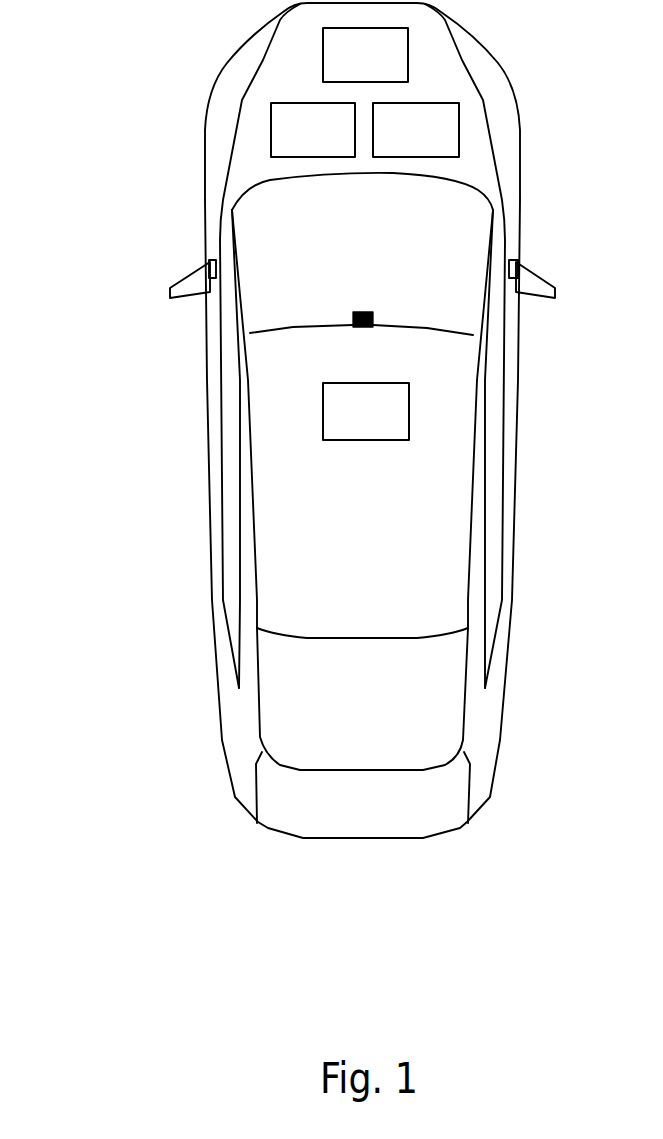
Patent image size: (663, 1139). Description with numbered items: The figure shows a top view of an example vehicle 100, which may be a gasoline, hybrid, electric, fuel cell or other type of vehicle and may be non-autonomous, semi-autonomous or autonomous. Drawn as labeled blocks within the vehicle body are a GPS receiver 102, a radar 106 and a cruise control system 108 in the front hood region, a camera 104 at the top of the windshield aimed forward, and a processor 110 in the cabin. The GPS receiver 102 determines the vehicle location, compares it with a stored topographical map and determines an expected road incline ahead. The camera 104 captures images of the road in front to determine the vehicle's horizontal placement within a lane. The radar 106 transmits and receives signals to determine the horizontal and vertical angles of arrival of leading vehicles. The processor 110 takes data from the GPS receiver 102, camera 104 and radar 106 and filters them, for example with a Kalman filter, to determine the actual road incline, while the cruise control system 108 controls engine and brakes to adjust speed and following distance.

The vehicle 100 is at (222, 76).
The GPS receiver 102 is at (387, 66).
The camera 104 is at (353, 326).
The radar 106 is at (333, 142).
The cruise control system 108 is at (437, 142).
The processor 110 is at (387, 422).